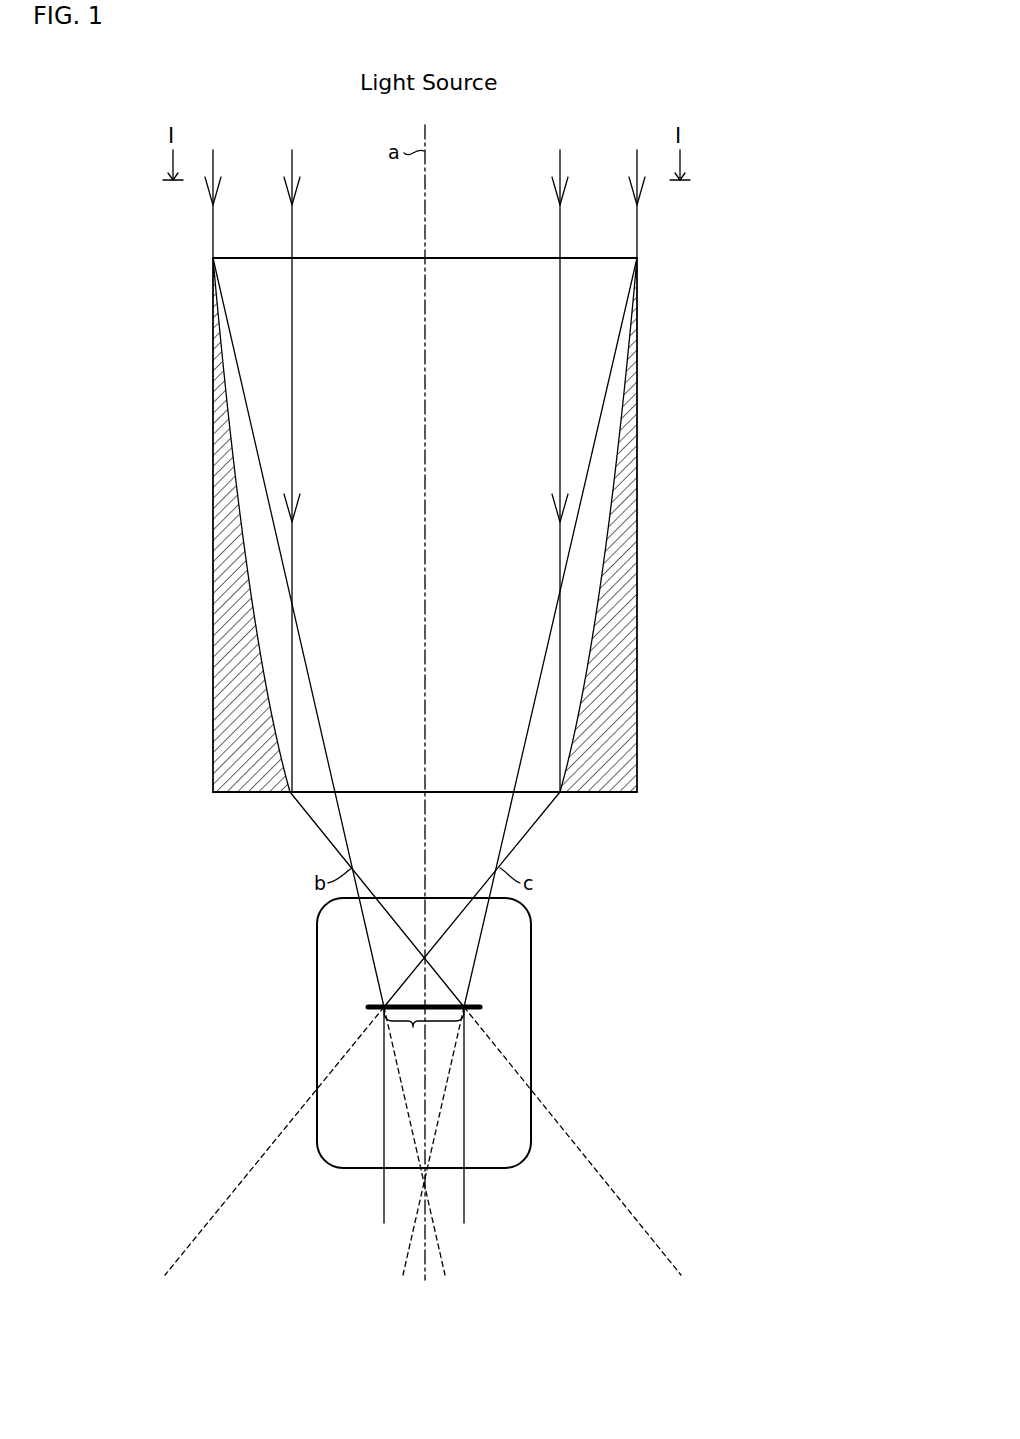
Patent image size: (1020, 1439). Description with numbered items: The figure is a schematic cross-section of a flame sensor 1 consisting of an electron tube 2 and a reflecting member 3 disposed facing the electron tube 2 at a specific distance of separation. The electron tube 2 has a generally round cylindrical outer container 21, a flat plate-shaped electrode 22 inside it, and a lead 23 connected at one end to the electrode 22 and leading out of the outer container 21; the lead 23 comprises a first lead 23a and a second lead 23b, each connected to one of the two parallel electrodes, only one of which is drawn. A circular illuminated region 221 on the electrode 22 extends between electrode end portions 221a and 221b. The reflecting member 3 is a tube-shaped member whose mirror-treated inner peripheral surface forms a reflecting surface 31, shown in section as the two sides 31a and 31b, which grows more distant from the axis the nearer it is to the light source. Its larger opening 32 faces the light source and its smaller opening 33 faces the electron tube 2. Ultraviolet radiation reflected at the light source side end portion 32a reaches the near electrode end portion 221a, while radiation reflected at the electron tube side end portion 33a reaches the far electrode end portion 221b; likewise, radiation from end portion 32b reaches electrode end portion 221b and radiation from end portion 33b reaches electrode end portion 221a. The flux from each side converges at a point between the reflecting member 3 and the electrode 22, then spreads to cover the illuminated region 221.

The flame sensor 1 is at (87, 134).
The electron tube 2 is at (384, 1027).
The reflecting member 3 is at (400, 526).
The outer container 21 is at (316, 965).
The electrode 22 is at (368, 1007).
The lead 23 is at (418, 1133).
The first lead 23a is at (384, 1199).
The second lead 23b is at (464, 1199).
The reflecting surface 31 is at (425, 525).
The reflecting surface portion 31a is at (229, 411).
The reflecting surface portion 31b is at (621, 411).
The opening 32 is at (345, 257).
The light source side end portion 32a is at (212, 258).
The light source side end portion 32b is at (638, 258).
The opening 33 is at (372, 794).
The electron tube side end portion 33a is at (290, 793).
The electron tube side end portion 33b is at (560, 793).
The illuminated region 221 is at (424, 1033).
The electrode end portion 221a is at (383, 1005).
The electrode end portion 221b is at (465, 1005).